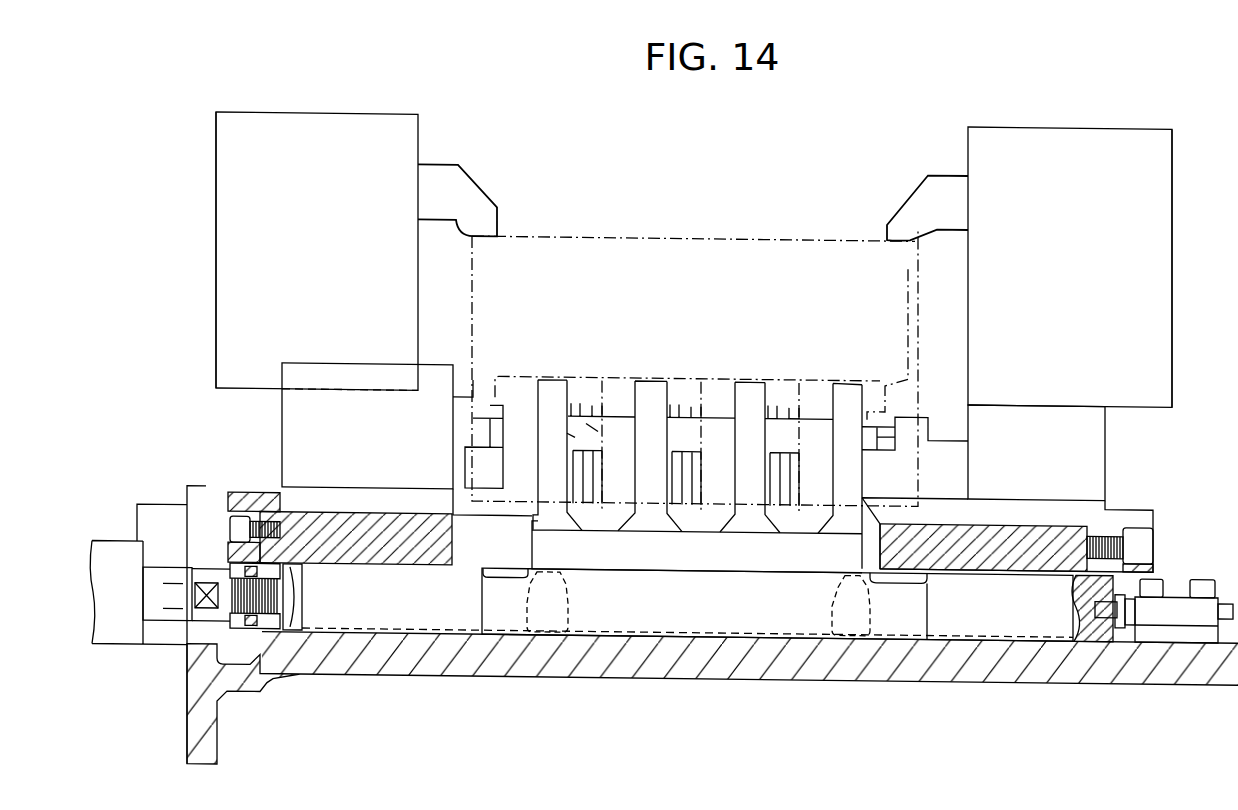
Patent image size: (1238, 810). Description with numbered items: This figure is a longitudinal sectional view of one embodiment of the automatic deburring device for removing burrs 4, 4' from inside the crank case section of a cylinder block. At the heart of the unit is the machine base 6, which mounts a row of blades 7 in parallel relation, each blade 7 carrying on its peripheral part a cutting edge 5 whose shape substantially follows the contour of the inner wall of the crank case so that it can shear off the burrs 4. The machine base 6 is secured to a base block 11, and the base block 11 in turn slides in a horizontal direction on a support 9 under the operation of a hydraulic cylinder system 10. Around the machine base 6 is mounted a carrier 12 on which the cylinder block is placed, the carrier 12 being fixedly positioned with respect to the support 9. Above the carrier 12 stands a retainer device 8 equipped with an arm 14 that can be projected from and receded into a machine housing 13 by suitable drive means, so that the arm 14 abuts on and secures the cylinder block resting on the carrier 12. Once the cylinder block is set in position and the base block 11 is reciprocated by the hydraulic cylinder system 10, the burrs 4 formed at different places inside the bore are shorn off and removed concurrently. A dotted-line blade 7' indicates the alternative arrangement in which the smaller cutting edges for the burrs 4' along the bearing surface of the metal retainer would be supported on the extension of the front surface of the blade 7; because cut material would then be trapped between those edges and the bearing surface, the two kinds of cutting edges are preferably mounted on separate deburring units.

The burrs 4 is at (687, 417).
The burrs 4' is at (607, 443).
The cutting edge 5 is at (576, 392).
The machine base 6 is at (771, 566).
The blade 7 is at (699, 452).
The blade 7' is at (541, 453).
The retainer device 8 is at (375, 113).
The support 9 is at (559, 663).
The hydraulic cylinder system 10 is at (153, 652).
The base block 11 is at (740, 627).
The carrier 12 is at (473, 405).
The machine housing 13 is at (224, 234).
The arm 14 is at (488, 208).